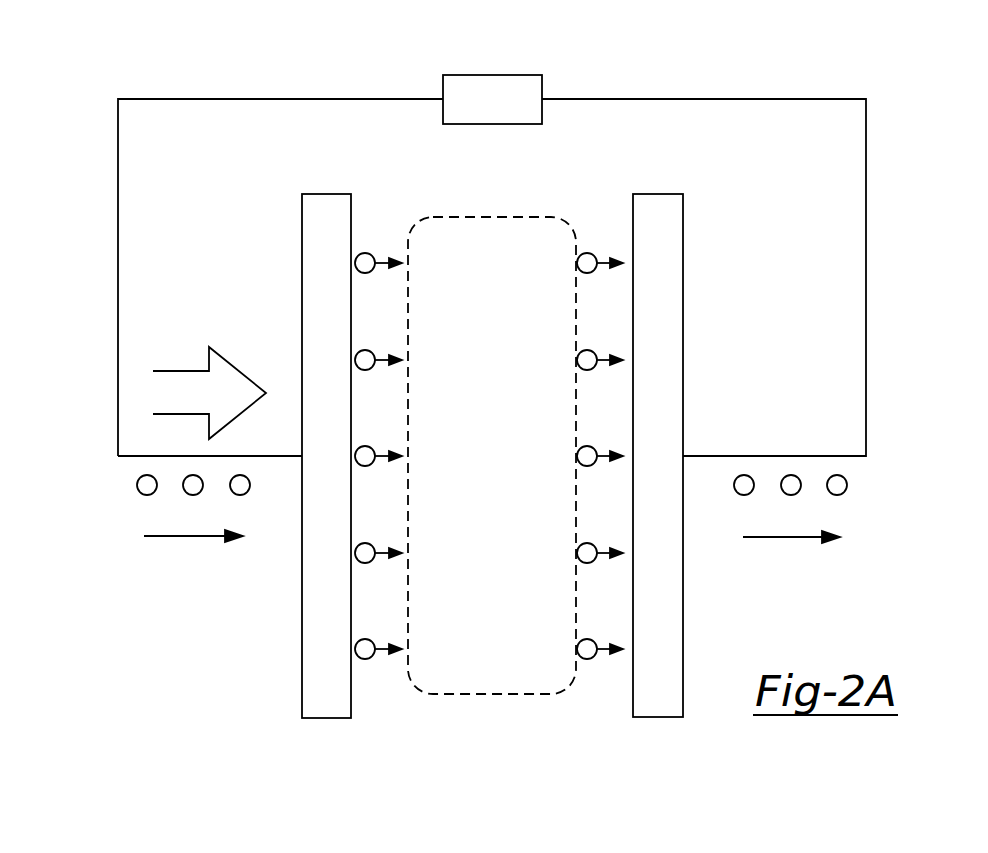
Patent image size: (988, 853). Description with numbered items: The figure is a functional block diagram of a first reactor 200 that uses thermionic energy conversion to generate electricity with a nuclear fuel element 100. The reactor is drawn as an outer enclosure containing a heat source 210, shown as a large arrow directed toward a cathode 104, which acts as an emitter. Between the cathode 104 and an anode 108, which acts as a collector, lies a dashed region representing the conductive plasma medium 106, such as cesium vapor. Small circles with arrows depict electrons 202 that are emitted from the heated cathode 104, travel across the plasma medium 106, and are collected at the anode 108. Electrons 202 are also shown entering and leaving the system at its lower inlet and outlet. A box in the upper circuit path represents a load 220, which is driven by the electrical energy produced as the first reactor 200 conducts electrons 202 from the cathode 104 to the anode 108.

The first reactor 200 is at (810, 83).
The load 220 is at (542, 85).
The electrons 202 is at (370, 254).
The plasma medium 106 is at (520, 238).
The heat source 210 is at (183, 370).
The cathode 104 is at (302, 604).
The anode 108 is at (683, 612).
The nuclear fuel element 100 is at (496, 464).